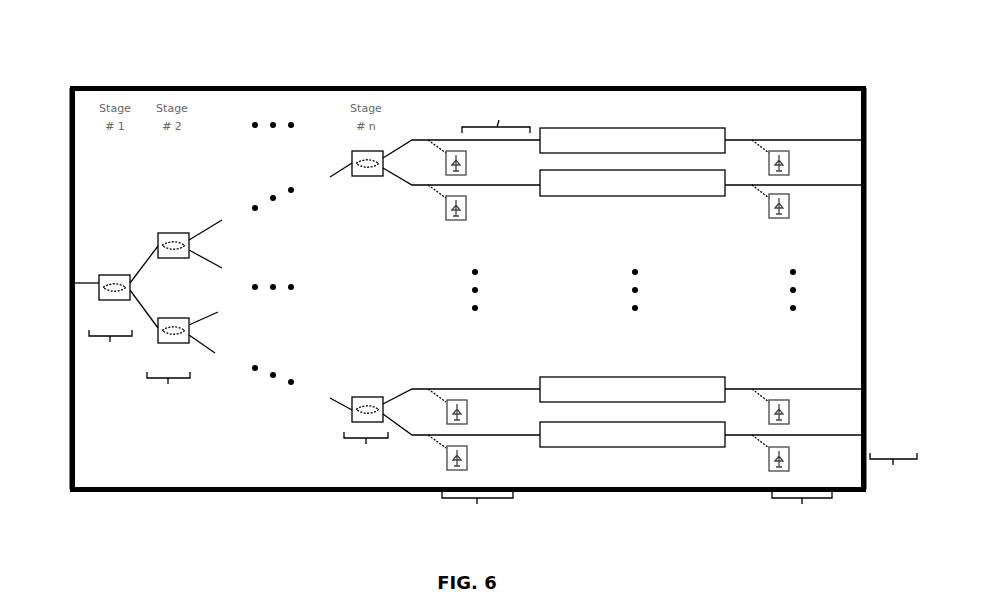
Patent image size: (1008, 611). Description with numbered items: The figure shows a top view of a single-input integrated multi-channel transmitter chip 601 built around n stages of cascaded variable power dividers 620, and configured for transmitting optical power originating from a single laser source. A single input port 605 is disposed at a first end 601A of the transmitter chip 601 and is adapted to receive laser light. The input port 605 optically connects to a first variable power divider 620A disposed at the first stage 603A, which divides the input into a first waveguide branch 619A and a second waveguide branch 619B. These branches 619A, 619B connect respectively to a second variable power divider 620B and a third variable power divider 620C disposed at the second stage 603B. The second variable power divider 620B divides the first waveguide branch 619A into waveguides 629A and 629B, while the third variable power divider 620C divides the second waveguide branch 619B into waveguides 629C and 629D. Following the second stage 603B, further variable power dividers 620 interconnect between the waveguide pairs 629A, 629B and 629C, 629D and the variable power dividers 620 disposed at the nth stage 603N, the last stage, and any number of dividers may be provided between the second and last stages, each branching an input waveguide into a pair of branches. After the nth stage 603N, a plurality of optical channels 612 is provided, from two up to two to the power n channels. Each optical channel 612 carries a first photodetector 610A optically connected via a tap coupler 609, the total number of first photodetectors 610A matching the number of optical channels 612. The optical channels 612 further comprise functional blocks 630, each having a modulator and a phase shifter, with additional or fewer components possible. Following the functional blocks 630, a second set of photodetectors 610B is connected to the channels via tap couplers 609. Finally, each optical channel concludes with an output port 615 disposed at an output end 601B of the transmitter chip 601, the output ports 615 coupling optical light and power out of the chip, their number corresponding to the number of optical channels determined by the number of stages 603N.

The single-input integrated multi-channel transmitter chip 601 is at (822, 110).
The first end 601A is at (78, 72).
The output end 601B is at (858, 72).
The single input port 605 is at (60, 297).
The Stage #1 603A is at (110, 351).
The Stage #2 603B is at (168, 392).
The Stage #n 603N is at (366, 453).
The first waveguide branch 619A is at (142, 264).
The second waveguide branch 619B is at (144, 307).
The variable power dividers 620 is at (366, 176).
The first variable power divider 620A is at (117, 275).
The second variable power divider 620B is at (175, 233).
The third variable power divider 620C is at (180, 318).
The waveguide 629A is at (212, 221).
The waveguide 629B is at (215, 260).
The waveguide 629C is at (218, 315).
The waveguide 629D is at (213, 357).
The tap coupler 609 is at (440, 197).
The optical channels 612 is at (496, 115).
The first photodetectors 610A is at (477, 512).
The second set of photodetectors 610B is at (802, 512).
The functional blocks 630 is at (535, 447).
The output port 615 is at (893, 314).